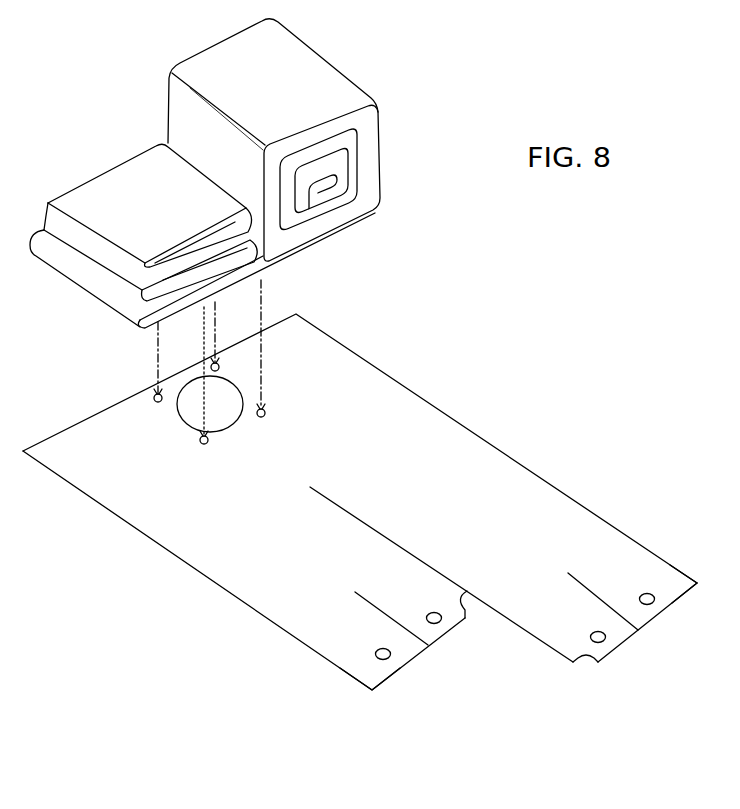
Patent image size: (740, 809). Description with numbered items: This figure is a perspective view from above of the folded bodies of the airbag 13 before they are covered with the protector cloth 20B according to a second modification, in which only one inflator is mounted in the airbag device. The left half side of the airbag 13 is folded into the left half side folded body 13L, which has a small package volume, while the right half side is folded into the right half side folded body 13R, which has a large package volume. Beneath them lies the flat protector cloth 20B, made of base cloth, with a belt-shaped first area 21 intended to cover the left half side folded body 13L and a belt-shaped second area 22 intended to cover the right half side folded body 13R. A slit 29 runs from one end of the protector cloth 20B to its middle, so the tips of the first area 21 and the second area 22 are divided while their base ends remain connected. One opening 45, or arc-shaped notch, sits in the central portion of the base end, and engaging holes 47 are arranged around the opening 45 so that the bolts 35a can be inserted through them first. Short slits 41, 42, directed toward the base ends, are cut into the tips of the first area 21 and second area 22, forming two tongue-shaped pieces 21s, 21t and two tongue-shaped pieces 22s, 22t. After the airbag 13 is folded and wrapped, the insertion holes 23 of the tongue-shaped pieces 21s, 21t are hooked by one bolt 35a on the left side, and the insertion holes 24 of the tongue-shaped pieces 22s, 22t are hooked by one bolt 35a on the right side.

The airbag 13 is at (348, 52).
The right half side folded body 13R is at (383, 130).
The left half side folded body 13L is at (92, 197).
The bolts 35a is at (263, 313).
The engaging holes 47 is at (154, 403).
The opening 45 is at (218, 418).
The protector cloth 20B is at (513, 451).
The first area 21 is at (312, 633).
The second area 22 is at (560, 527).
The slit 29 is at (407, 547).
The slit 41 is at (378, 608).
The slit 42 is at (590, 583).
The insertion holes 23 is at (391, 657).
The insertion holes 24 is at (655, 598).
The tongue-shaped piece 21t is at (437, 635).
The tongue-shaped piece 22t is at (558, 640).
The tongue-shaped piece 21s is at (371, 676).
The tongue-shaped piece 22s is at (658, 613).